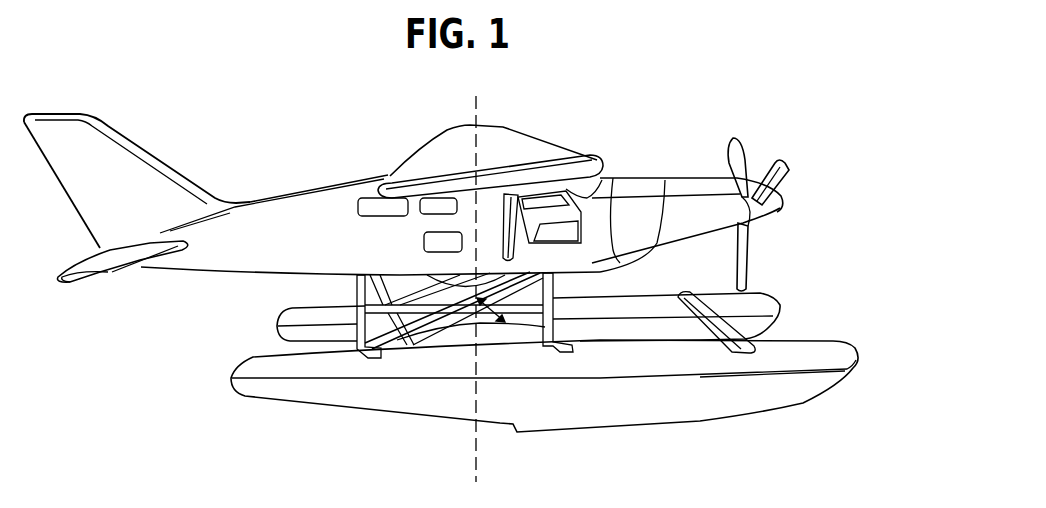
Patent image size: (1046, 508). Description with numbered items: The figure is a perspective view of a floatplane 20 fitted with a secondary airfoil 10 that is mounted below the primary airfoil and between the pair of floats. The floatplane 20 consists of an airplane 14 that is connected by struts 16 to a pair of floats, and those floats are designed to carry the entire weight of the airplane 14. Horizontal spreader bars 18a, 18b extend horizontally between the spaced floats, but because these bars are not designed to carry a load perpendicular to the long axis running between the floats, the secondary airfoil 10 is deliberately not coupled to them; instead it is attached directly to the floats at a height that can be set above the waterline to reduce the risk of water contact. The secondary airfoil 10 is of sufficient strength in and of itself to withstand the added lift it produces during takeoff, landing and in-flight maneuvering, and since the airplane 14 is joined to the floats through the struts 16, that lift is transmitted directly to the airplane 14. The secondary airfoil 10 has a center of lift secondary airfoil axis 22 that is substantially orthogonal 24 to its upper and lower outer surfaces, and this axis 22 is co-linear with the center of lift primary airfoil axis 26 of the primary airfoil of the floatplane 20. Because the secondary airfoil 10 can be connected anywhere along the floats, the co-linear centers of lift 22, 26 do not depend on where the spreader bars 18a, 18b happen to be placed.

The secondary airfoil 10 is at (527, 335).
The airplane 14 is at (780, 202).
The struts 16 is at (665, 180).
The horizontal spreader bar 18a is at (287, 340).
The horizontal spreader bar 18b is at (577, 347).
The floatplane 20 is at (780, 160).
The center of lift secondary airfoil axis 22 is at (433, 289).
The center of lift primary airfoil axis 26 is at (472, 443).
The substantially orthogonal orientation 24 is at (487, 320).